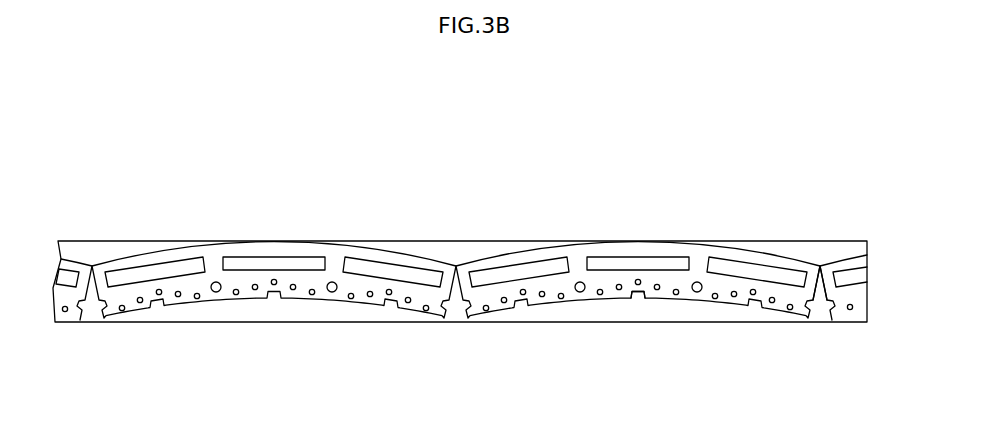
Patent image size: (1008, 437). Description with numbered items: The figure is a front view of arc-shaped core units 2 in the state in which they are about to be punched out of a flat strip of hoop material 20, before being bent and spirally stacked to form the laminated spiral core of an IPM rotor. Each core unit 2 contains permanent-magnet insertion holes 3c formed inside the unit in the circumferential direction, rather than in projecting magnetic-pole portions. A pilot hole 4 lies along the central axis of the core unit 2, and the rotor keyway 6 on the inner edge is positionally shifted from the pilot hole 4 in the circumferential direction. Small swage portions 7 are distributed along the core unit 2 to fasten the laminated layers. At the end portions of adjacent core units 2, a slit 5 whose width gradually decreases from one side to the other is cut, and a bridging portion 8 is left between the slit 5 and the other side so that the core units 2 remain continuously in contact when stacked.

The hoop material 20 is at (400, 246).
The core unit 2 is at (542, 275).
The permanent-magnet insertion hole 3c is at (620, 258).
The pilot hole 4 is at (697, 288).
The slit 5 is at (822, 322).
The rotor keyway 6 is at (641, 297).
The swage portion 7 is at (790, 309).
The bridging portion 8 is at (821, 266).